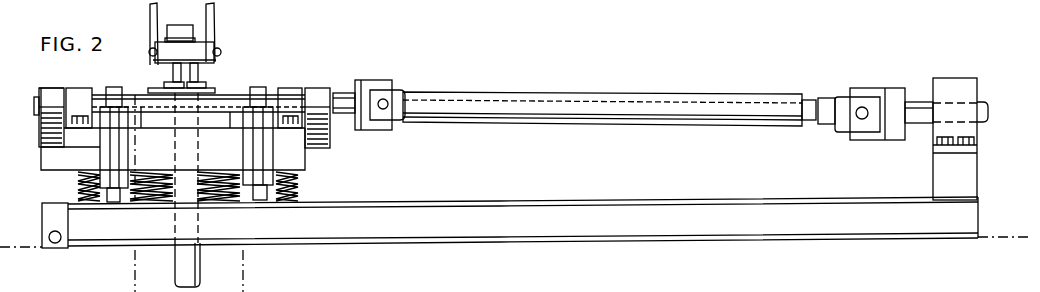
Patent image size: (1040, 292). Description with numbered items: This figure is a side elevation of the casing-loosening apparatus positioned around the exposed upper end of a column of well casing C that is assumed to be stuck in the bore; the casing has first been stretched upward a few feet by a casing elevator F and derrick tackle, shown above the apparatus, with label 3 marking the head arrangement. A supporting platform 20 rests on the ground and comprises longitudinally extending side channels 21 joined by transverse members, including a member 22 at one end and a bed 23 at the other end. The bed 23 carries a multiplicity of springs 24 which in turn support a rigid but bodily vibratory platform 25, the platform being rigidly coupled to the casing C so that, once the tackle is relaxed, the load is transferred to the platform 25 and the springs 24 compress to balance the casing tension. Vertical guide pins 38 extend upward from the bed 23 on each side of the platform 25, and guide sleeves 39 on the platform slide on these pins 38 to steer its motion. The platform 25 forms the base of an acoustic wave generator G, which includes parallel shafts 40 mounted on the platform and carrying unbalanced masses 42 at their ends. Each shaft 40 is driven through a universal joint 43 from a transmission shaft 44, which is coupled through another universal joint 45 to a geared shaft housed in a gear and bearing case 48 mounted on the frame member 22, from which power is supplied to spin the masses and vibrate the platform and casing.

The tool head 3 is at (204, 33).
The supporting platform 20 is at (567, 248).
The side channels 21 is at (622, 203).
The transverse member 22 is at (972, 164).
The bed 23 is at (41, 207).
The springs 24 is at (299, 177).
The vibratory platform 25 is at (40, 157).
The vertical guide pins 38 is at (263, 92).
The guide sleeves 39 is at (248, 87).
The parallel shafts 40 is at (127, 95).
The unbalanced masses 42 is at (47, 118).
The universal joints 43 is at (391, 82).
The transmission shafts 44 is at (525, 125).
The universal joints 45 is at (878, 88).
The gear and bearing case 48 is at (976, 79).
The acoustic wave generator G is at (37, 89).
The casing elevator F is at (206, 47).
The column of well casing C is at (199, 77).